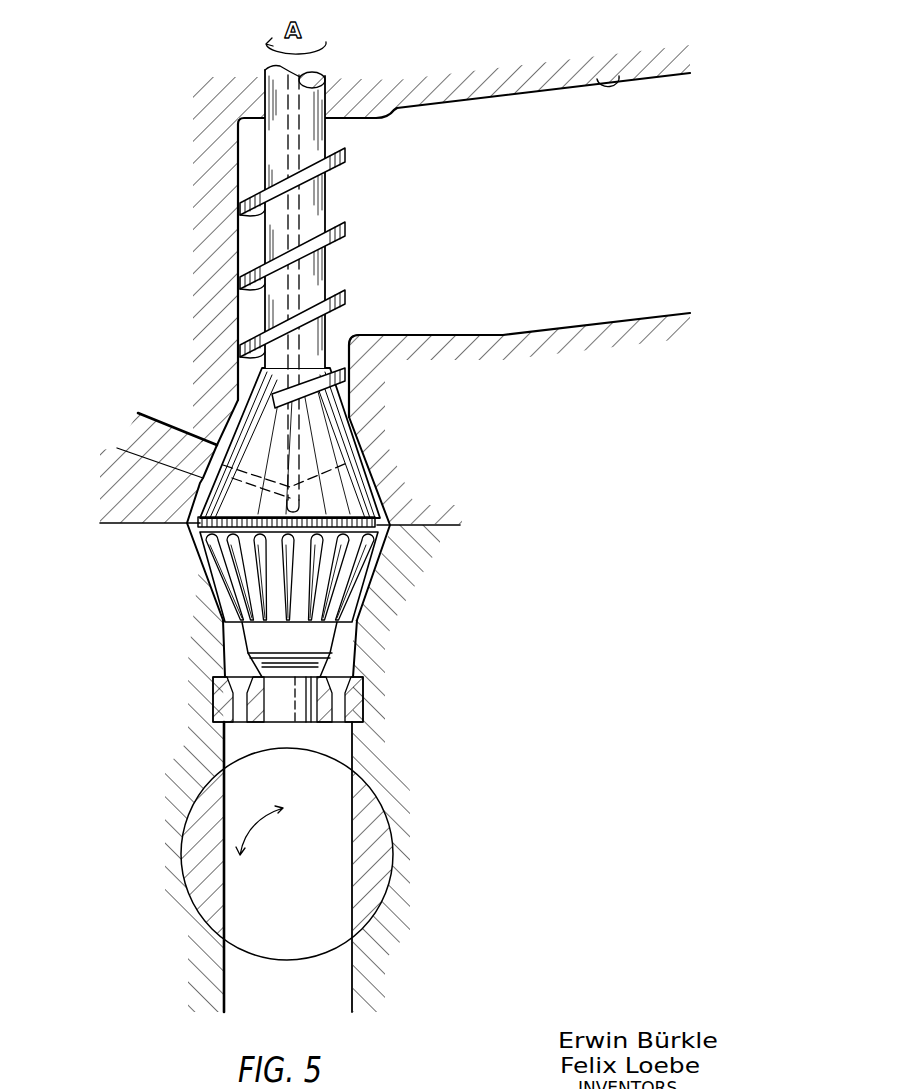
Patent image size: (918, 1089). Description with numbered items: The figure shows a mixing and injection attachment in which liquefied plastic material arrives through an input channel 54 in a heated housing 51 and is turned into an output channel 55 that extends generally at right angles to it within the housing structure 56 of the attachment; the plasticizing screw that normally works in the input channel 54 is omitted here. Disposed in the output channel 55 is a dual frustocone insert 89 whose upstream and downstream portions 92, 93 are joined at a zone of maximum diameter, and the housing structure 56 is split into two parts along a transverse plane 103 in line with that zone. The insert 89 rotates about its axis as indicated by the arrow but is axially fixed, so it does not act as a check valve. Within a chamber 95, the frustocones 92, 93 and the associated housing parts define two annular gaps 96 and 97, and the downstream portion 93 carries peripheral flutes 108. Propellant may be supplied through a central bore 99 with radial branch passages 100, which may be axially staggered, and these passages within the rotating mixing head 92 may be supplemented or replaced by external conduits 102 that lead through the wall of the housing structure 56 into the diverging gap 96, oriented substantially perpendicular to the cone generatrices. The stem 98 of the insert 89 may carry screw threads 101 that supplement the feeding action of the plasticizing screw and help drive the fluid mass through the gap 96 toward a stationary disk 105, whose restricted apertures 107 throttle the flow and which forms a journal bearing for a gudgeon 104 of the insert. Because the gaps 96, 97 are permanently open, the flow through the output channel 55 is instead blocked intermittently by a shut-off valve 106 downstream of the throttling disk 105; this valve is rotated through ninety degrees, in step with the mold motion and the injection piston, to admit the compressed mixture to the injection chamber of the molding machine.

The heated housing 51 is at (592, 80).
The input channel 54 is at (390, 242).
The output channel 55 is at (245, 297).
The housing structure 56 is at (187, 785).
The dual frustocone insert 89 is at (381, 499).
The upstream frustocone portion 92 is at (332, 430).
The downstream frustocone portion 93 is at (328, 645).
The chamber 95 is at (177, 537).
The annular gap 96 is at (232, 420).
The annular gap 97 is at (213, 588).
The stem 98 is at (272, 232).
The central bore 99 is at (238, 153).
The radial branch passages 100 is at (285, 477).
The screw threads 101 is at (347, 153).
The external conduits 102 is at (140, 437).
The transverse plane 103 is at (447, 530).
The gudgeon 104 is at (277, 703).
The stationary disk 105 is at (362, 698).
The shut-off valve 106 is at (375, 850).
The restricted apertures 107 is at (340, 712).
The peripheral flutes 108 is at (337, 572).